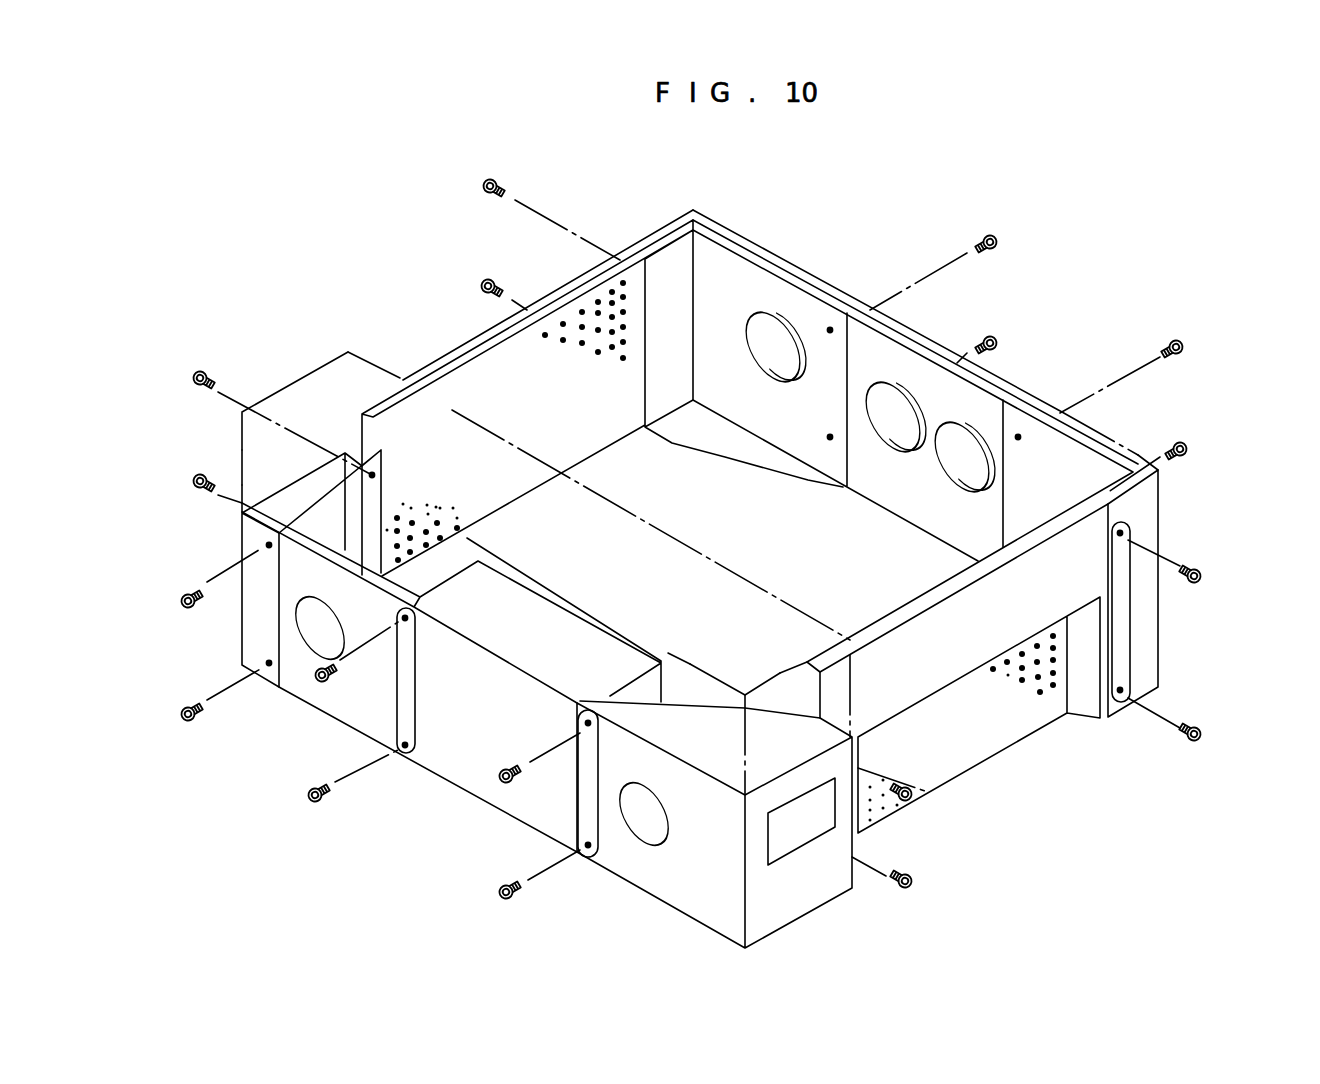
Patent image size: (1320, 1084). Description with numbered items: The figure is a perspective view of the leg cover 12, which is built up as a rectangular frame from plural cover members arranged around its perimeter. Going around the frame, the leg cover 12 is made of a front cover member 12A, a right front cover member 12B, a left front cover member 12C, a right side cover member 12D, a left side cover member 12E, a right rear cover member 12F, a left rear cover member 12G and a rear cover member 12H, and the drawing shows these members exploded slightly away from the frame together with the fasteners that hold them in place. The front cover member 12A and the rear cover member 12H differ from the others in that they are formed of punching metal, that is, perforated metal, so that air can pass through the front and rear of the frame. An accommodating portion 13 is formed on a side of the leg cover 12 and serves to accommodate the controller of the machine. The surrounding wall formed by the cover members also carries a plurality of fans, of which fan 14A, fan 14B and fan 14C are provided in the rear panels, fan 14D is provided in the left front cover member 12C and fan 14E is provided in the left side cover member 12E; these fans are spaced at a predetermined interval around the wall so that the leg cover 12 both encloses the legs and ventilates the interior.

The leg cover 12 is at (1255, 404).
The front cover member 12A is at (987, 752).
The right front cover member 12B is at (1147, 637).
The left front cover member 12C is at (712, 829).
The right side cover member 12D is at (1025, 390).
The left side cover member 12E is at (420, 692).
The right rear cover member 12F is at (835, 376).
The left rear cover member 12G is at (247, 538).
The rear cover member 12H is at (490, 363).
The accommodating portion 13 is at (542, 613).
The fan 14A is at (968, 470).
The fan 14B is at (895, 428).
The fan 14C is at (777, 363).
The fan 14D is at (658, 833).
The fan 14E is at (325, 623).